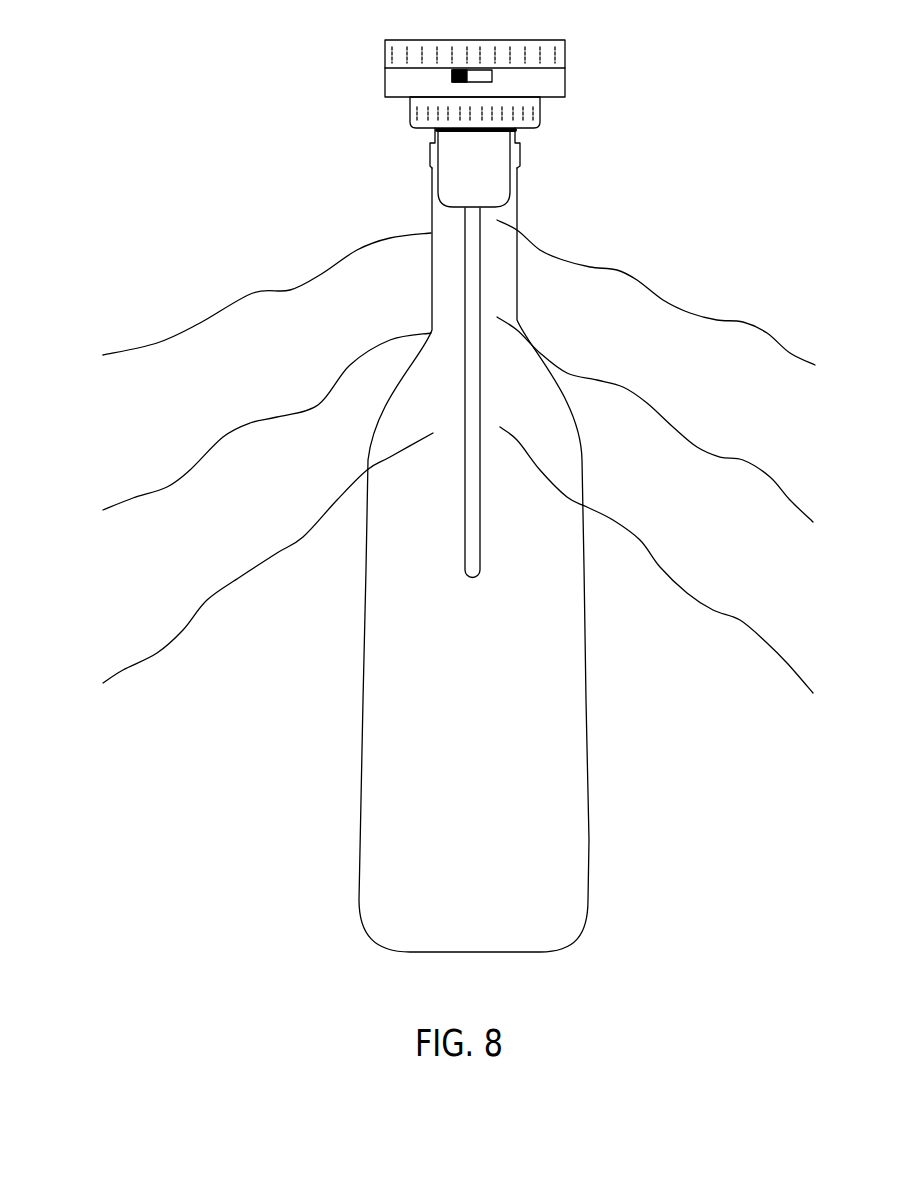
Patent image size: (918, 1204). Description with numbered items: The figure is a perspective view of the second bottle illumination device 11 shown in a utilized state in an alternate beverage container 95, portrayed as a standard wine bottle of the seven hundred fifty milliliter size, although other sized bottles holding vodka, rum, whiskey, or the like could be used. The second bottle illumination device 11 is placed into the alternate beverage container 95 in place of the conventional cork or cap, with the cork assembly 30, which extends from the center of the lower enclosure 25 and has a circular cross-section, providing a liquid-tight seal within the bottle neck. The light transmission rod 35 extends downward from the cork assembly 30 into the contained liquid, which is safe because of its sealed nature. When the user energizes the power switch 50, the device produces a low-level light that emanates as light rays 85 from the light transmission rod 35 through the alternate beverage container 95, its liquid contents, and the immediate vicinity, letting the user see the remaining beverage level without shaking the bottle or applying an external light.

The second bottle illumination device 11 is at (157, 797).
The lower enclosure 25 is at (523, 112).
The cork assembly 30 is at (472, 168).
The light transmission rod 35 is at (462, 375).
The power switch 50 is at (452, 75).
The light rays 85 is at (253, 295).
The alternate beverage container 95 is at (518, 222).